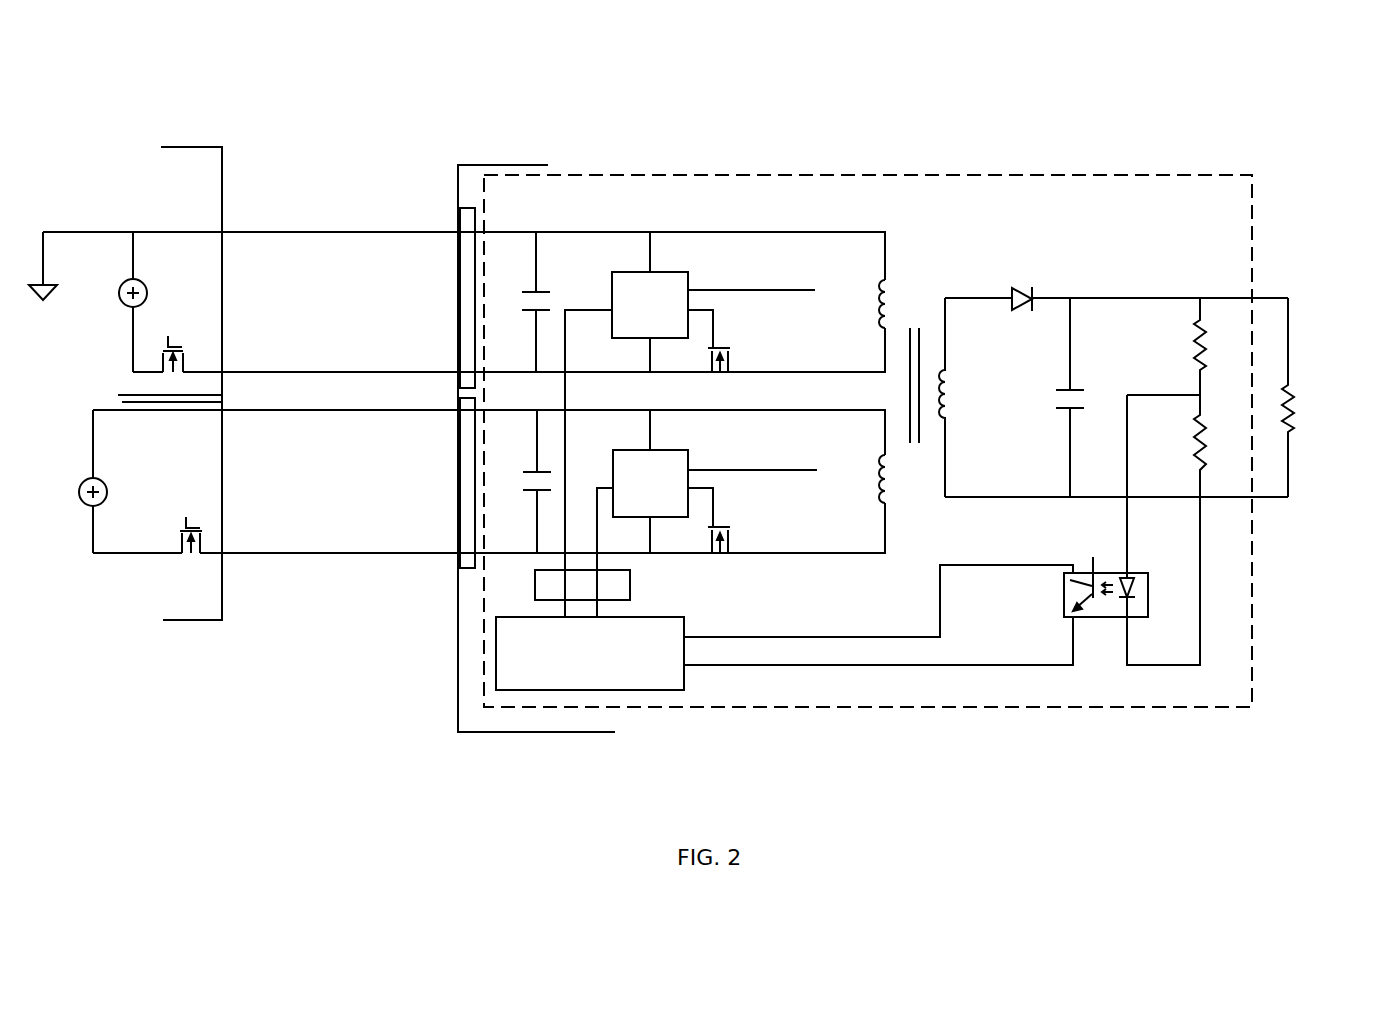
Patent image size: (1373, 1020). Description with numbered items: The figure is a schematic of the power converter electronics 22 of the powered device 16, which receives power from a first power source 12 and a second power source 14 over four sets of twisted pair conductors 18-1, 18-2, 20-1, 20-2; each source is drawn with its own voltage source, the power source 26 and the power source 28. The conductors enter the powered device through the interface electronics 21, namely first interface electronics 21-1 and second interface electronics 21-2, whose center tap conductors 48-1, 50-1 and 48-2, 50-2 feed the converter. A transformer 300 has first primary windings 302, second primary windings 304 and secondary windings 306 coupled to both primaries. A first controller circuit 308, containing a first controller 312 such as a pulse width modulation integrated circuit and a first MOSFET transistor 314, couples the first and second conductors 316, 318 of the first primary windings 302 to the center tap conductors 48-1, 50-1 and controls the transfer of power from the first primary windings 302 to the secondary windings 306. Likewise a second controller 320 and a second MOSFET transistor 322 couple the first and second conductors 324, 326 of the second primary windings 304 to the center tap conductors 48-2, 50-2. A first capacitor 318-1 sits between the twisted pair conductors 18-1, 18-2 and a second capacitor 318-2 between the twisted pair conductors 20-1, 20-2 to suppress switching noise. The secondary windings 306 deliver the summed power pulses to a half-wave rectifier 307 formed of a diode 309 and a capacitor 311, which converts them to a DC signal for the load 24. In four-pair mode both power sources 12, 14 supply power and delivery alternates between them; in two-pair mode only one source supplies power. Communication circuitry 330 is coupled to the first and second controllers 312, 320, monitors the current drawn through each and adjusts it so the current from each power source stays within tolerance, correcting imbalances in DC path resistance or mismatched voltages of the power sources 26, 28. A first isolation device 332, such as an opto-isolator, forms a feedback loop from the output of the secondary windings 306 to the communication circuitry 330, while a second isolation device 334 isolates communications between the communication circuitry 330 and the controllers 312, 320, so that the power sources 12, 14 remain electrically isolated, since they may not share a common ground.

The first power source 12 is at (192, 147).
The second power source 14 is at (192, 620).
The powered device 16 is at (500, 732).
The first set of twisted pair conductors 18-1 is at (252, 232).
The second set of twisted pair conductors 18-2 is at (252, 372).
The third set of twisted pair conductors 20-1 is at (250, 412).
The fourth set of twisted pair conductors 20-2 is at (250, 555).
The connector 21 is at (444, 353).
The first interface electronics 21-1 is at (467, 208).
The second interface electronics 21-2 is at (462, 568).
The power converter electronics 22 is at (1132, 172).
The load 24 is at (1290, 388).
The power source 26 is at (118, 312).
The power source 28 is at (112, 478).
The center tap conductor 48-1 is at (495, 233).
The center tap conductor 48-2 is at (500, 411).
The center tap conductor 50-1 is at (503, 372).
The center tap conductor 50-2 is at (503, 553).
The transformer 300 is at (974, 351).
The first primary windings 302 is at (885, 285).
The second primary windings 304 is at (885, 460).
The secondary windings 306 is at (950, 378).
The half-wave rectifier 307 is at (1116, 362).
The first controller circuit 308 is at (696, 366).
The diode 309 is at (1018, 288).
The capacitor 311 is at (1070, 450).
The first controller 312 is at (673, 272).
The first MOSFET transistor 314 is at (733, 357).
The first conductor 316 is at (800, 232).
The second conductor 318 is at (788, 372).
The first capacitor 318-1 is at (540, 270).
The second capacitor 318-2 is at (545, 435).
The second controller 320 is at (680, 450).
The second MOSFET transistor 322 is at (733, 545).
The first conductor 324 is at (780, 410).
The second conductor 326 is at (800, 553).
The communication circuitry 330 is at (690, 628).
The first isolation device 332 is at (1103, 617).
The second isolation device 334 is at (632, 585).